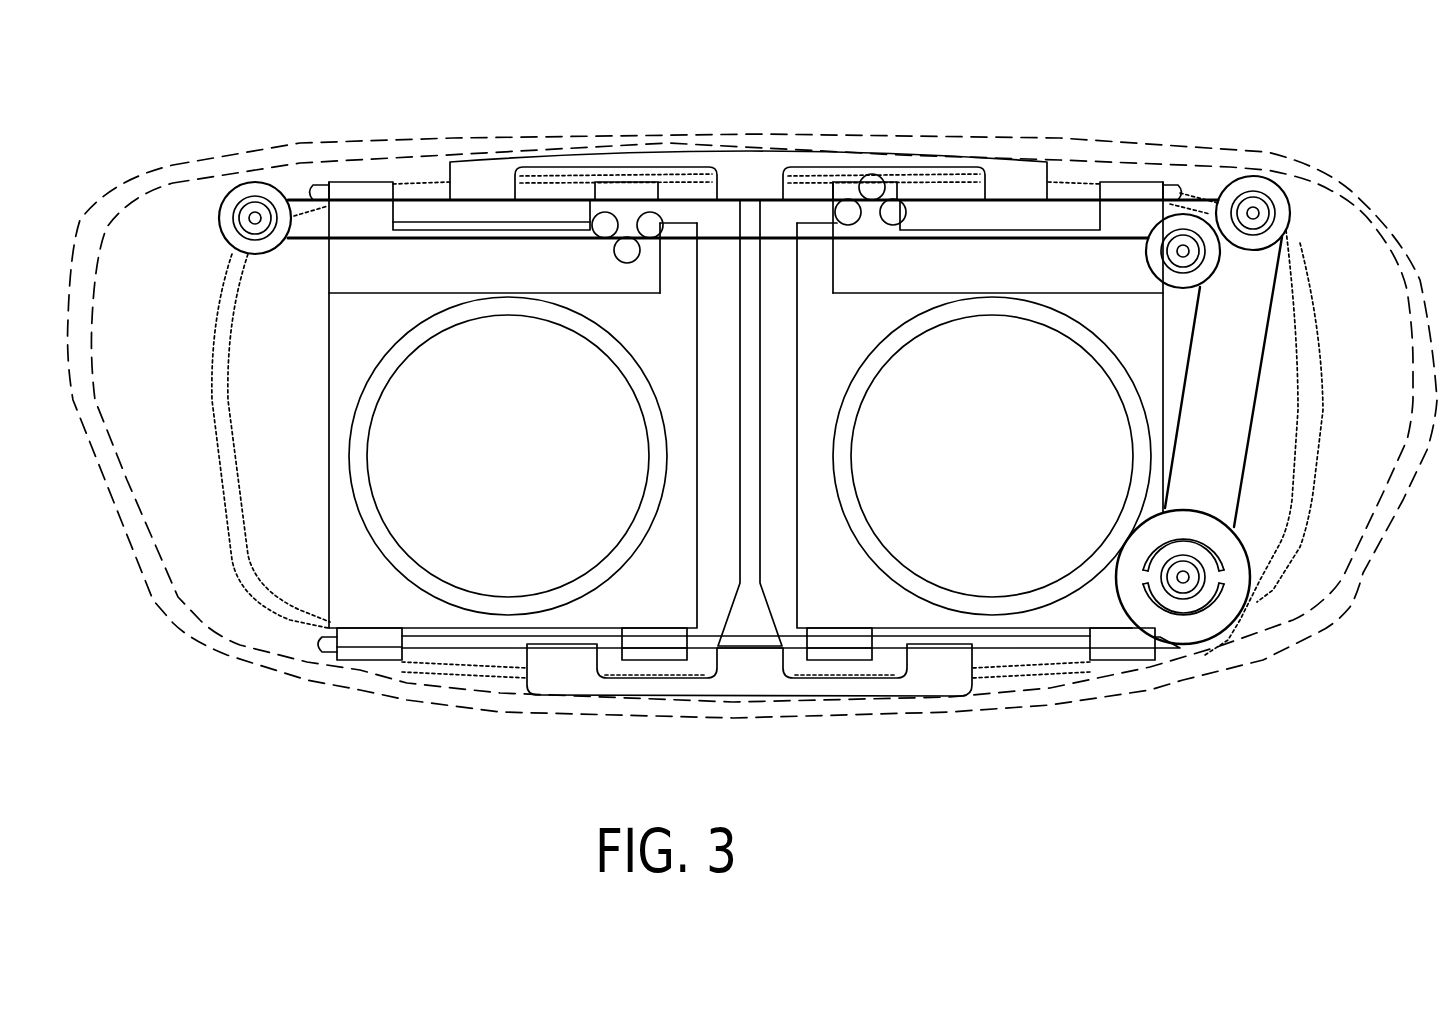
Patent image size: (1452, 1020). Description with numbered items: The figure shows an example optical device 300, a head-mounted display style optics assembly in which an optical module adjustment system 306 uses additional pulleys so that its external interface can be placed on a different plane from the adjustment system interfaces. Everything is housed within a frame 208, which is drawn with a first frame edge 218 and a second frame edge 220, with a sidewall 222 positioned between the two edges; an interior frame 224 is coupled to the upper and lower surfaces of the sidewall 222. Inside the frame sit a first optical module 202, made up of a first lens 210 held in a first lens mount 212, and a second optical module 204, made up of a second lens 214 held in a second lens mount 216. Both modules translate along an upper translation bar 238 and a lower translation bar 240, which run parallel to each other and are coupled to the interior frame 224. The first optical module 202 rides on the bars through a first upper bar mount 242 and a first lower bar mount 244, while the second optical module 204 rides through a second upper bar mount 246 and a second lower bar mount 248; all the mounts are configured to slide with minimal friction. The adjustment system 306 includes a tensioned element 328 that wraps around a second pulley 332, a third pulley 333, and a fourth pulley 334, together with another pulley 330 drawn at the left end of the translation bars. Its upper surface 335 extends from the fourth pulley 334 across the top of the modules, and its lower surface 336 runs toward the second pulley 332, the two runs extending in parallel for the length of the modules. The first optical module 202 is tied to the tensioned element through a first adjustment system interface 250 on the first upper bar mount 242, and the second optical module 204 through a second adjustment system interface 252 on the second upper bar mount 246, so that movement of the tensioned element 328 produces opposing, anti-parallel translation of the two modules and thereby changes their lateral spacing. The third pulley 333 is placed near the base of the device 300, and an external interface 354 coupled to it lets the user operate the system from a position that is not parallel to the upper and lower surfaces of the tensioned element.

The optical device 300 is at (1050, 42).
The frame 208 is at (160, 128).
The first frame edge 218 is at (125, 507).
The optical module adjustment system 306 is at (1275, 125).
The sidewall 222 is at (175, 368).
The first optical module 202 is at (312, 435).
The upper translation bar 238 is at (1082, 200).
The tensioned element 328 is at (320, 258).
The upper surface 335 is at (487, 200).
The interior frame 224 is at (733, 185).
The first upper bar mount 242 is at (358, 281).
The first lens mount 212 is at (651, 606).
The lower surface 336 is at (550, 240).
The first adjustment system interface 250 is at (610, 245).
The first lens 210 is at (495, 475).
The second upper bar mount 246 is at (1108, 281).
The second lens mount 216 is at (1075, 625).
The second adjustment system interface 252 is at (878, 235).
The second lens 214 is at (986, 475).
The first lower bar mount 244 is at (368, 618).
The second lower bar mount 248 is at (840, 628).
The lower translation bar 240 is at (490, 648).
The left idler pulley 330 is at (220, 215).
The second frame edge 220 is at (212, 427).
The second pulley 332 is at (1215, 268).
The fourth pulley 334 is at (1285, 197).
The third pulley 333 is at (1240, 537).
The second optical module 204 is at (1180, 384).
The external interface 354 is at (1220, 645).